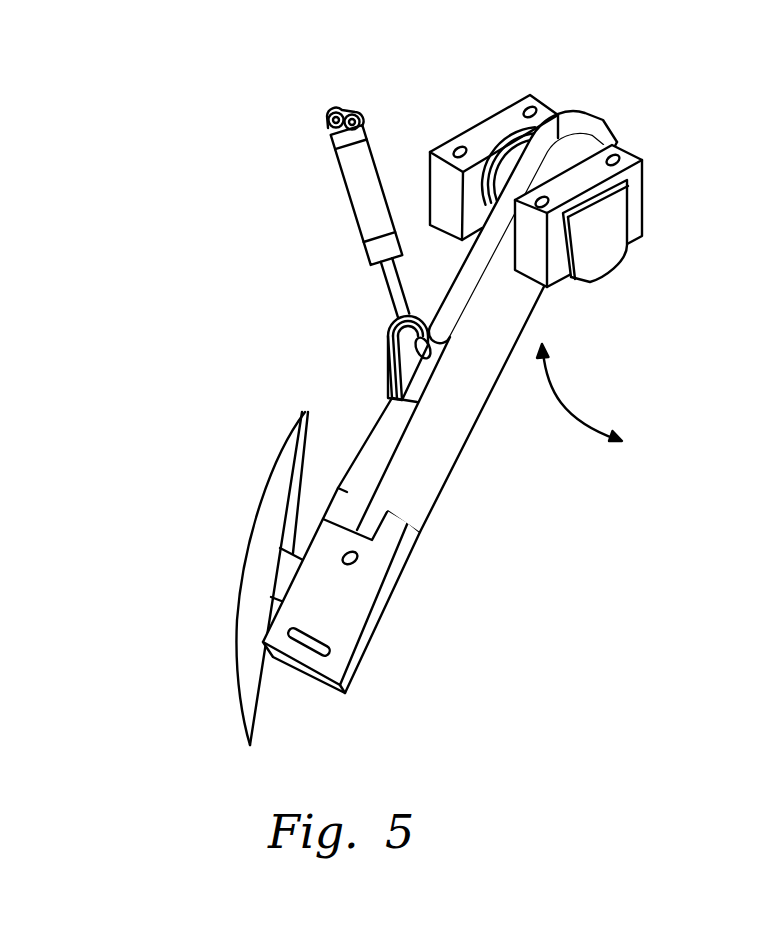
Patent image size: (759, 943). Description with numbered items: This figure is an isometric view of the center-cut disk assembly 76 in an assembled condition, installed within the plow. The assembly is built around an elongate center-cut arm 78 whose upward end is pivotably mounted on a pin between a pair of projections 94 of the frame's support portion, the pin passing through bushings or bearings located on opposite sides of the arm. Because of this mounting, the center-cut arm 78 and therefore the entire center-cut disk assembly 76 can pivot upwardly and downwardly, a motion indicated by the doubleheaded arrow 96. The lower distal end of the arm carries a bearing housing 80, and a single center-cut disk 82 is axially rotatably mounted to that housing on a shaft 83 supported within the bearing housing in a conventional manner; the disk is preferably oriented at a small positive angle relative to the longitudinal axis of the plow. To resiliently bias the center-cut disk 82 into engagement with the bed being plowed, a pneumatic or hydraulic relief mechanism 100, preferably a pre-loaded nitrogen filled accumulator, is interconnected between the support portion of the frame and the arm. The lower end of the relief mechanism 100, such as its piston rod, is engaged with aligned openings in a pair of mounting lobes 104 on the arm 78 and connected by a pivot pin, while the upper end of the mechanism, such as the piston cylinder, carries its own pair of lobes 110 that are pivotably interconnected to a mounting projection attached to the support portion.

The center-cut disk assembly 76 is at (397, 623).
The center-cut arm 78 is at (462, 448).
The bearing housing 80 is at (409, 556).
The center-cut disk 82 is at (243, 543).
The shaft 83 is at (338, 488).
The projections 94 is at (541, 97).
The doubleheaded arrow 96 is at (563, 407).
The relief mechanism 100 is at (345, 184).
The mounting lobes 104 is at (387, 320).
The lobes 110 is at (329, 114).